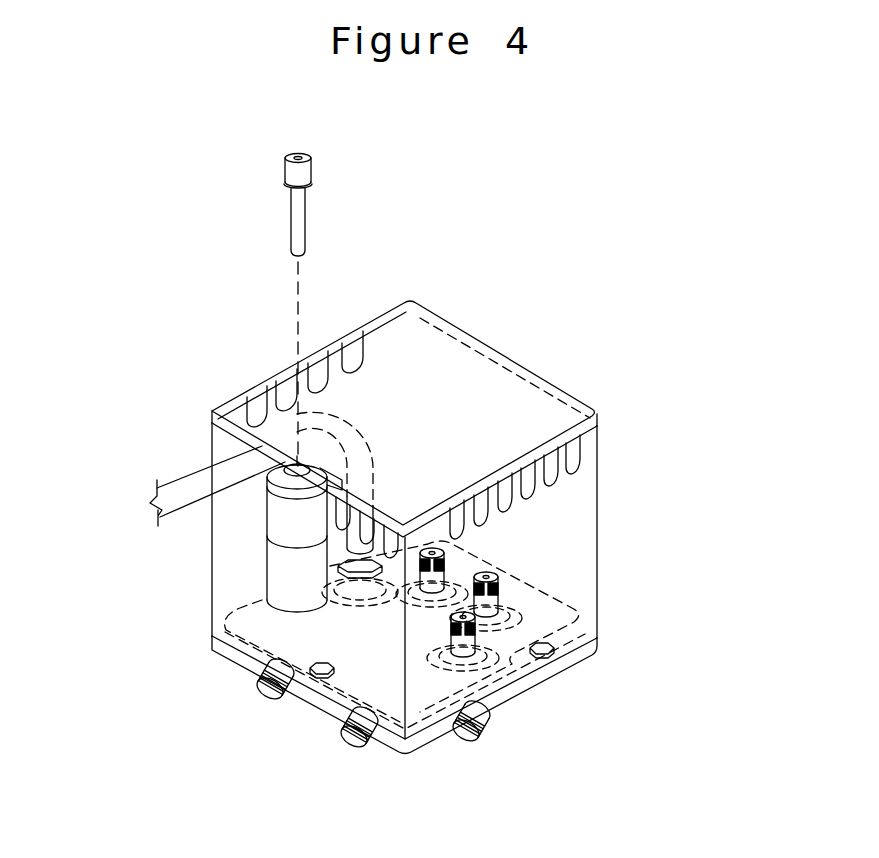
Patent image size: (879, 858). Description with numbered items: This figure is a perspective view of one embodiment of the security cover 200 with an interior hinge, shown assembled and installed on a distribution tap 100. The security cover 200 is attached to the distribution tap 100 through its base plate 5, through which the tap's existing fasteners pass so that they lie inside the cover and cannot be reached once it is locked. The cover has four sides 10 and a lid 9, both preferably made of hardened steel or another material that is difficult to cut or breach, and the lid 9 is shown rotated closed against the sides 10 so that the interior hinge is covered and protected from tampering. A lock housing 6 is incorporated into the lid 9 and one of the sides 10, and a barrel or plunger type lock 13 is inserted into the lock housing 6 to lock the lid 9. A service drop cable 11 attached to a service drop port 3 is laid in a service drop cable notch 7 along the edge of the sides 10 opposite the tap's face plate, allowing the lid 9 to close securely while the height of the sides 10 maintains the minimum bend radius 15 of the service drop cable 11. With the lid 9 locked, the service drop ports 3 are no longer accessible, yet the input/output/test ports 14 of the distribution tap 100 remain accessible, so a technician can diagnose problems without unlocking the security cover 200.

The service drop port 3 is at (498, 570).
The base plate 5 is at (577, 630).
The lock housing 6 is at (285, 510).
The service drop cable notch 7 is at (211, 417).
The lid 9 is at (510, 397).
The sides 10 is at (573, 593).
The service drop cable 11 is at (182, 469).
The barrel or plunger type lock 13 is at (287, 222).
The input/output/test ports 14 is at (268, 698).
The minimum bend radius 15 is at (352, 404).
The distribution tap 100 is at (431, 663).
The security cover 200 is at (523, 509).